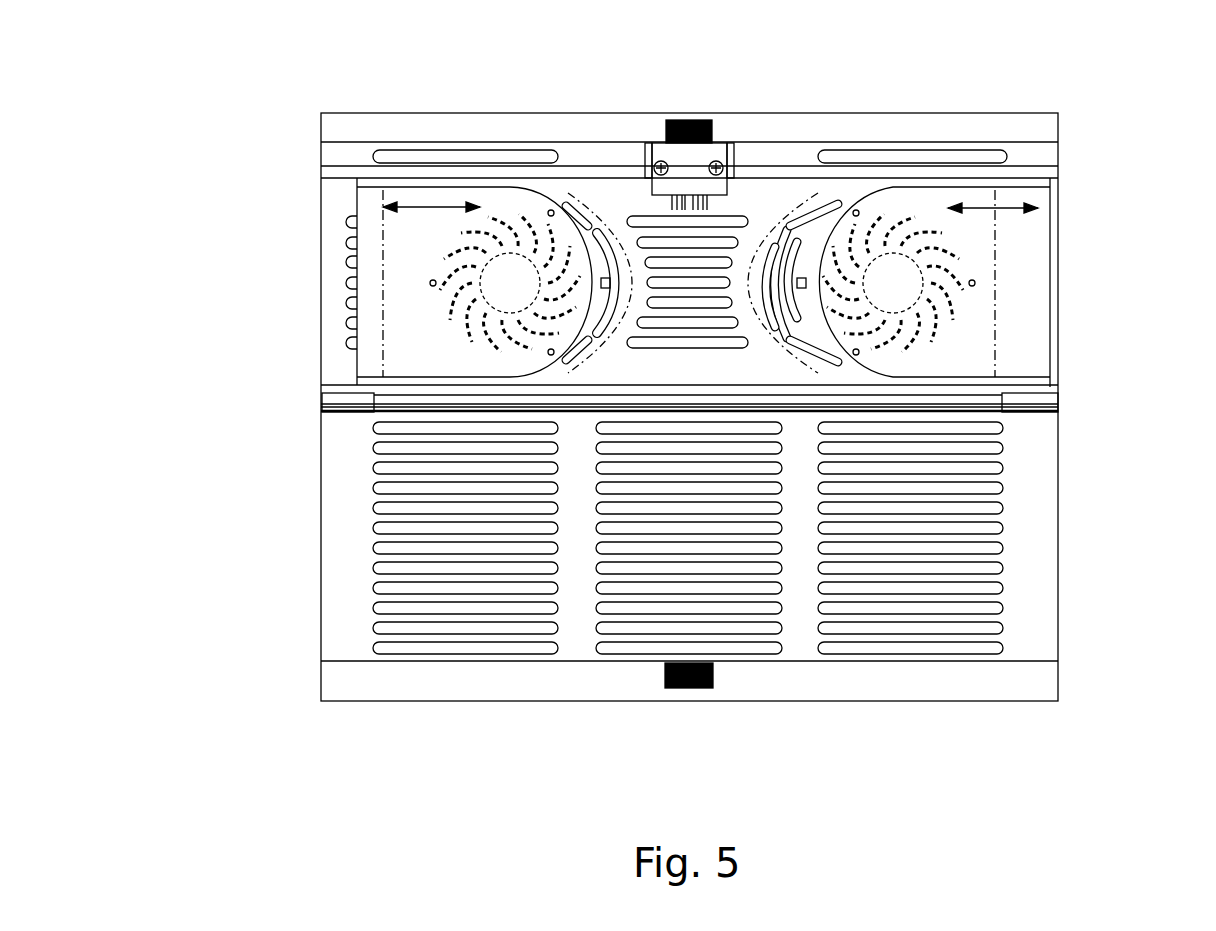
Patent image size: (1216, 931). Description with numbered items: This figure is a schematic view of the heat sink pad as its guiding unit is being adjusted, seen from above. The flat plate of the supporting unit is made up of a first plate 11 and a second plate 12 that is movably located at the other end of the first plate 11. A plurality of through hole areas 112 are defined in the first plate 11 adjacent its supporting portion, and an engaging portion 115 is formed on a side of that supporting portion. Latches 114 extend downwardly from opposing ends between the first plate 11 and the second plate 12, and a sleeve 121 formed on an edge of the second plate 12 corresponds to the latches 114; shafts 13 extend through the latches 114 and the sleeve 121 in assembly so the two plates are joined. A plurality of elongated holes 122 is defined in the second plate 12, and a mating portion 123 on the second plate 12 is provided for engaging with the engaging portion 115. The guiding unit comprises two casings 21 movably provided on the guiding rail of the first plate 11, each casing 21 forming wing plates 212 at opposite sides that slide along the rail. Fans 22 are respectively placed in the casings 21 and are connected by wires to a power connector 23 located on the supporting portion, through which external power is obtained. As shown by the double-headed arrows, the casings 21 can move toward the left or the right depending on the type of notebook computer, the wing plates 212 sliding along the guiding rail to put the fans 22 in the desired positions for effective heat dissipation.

The first plate 11 is at (330, 200).
The casing 21 is at (370, 258).
The wing plate 212 is at (400, 190).
The fan 22 is at (515, 265).
The engaging portion 115 is at (672, 122).
The power connector 23 is at (722, 150).
The through hole area 112 is at (800, 212).
The latch 114 is at (330, 397).
The shaft 13 is at (325, 404).
The sleeve 121 is at (375, 415).
The elongated hole 122 is at (1005, 545).
The second plate 12 is at (1043, 642).
The mating portion 123 is at (688, 690).